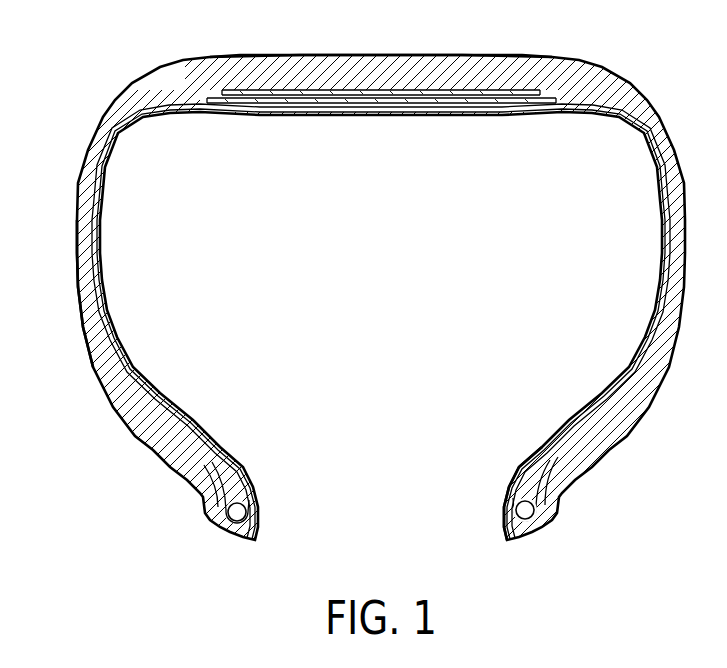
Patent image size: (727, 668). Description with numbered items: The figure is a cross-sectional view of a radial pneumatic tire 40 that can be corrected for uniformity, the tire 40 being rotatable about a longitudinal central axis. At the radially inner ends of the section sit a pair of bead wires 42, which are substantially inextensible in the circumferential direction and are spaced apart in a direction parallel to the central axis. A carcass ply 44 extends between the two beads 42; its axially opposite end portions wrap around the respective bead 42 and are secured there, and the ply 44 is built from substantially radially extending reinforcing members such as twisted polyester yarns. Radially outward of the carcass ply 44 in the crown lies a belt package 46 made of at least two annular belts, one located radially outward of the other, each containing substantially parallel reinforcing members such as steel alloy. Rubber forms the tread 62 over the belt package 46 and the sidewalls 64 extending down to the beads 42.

The radial pneumatic tire 40 is at (637, 108).
The bead wires 42 is at (246, 510).
The carcass ply 44 is at (530, 457).
The belt package 46 is at (260, 90).
The tread 62 is at (373, 65).
The sidewalls 64 is at (80, 254).